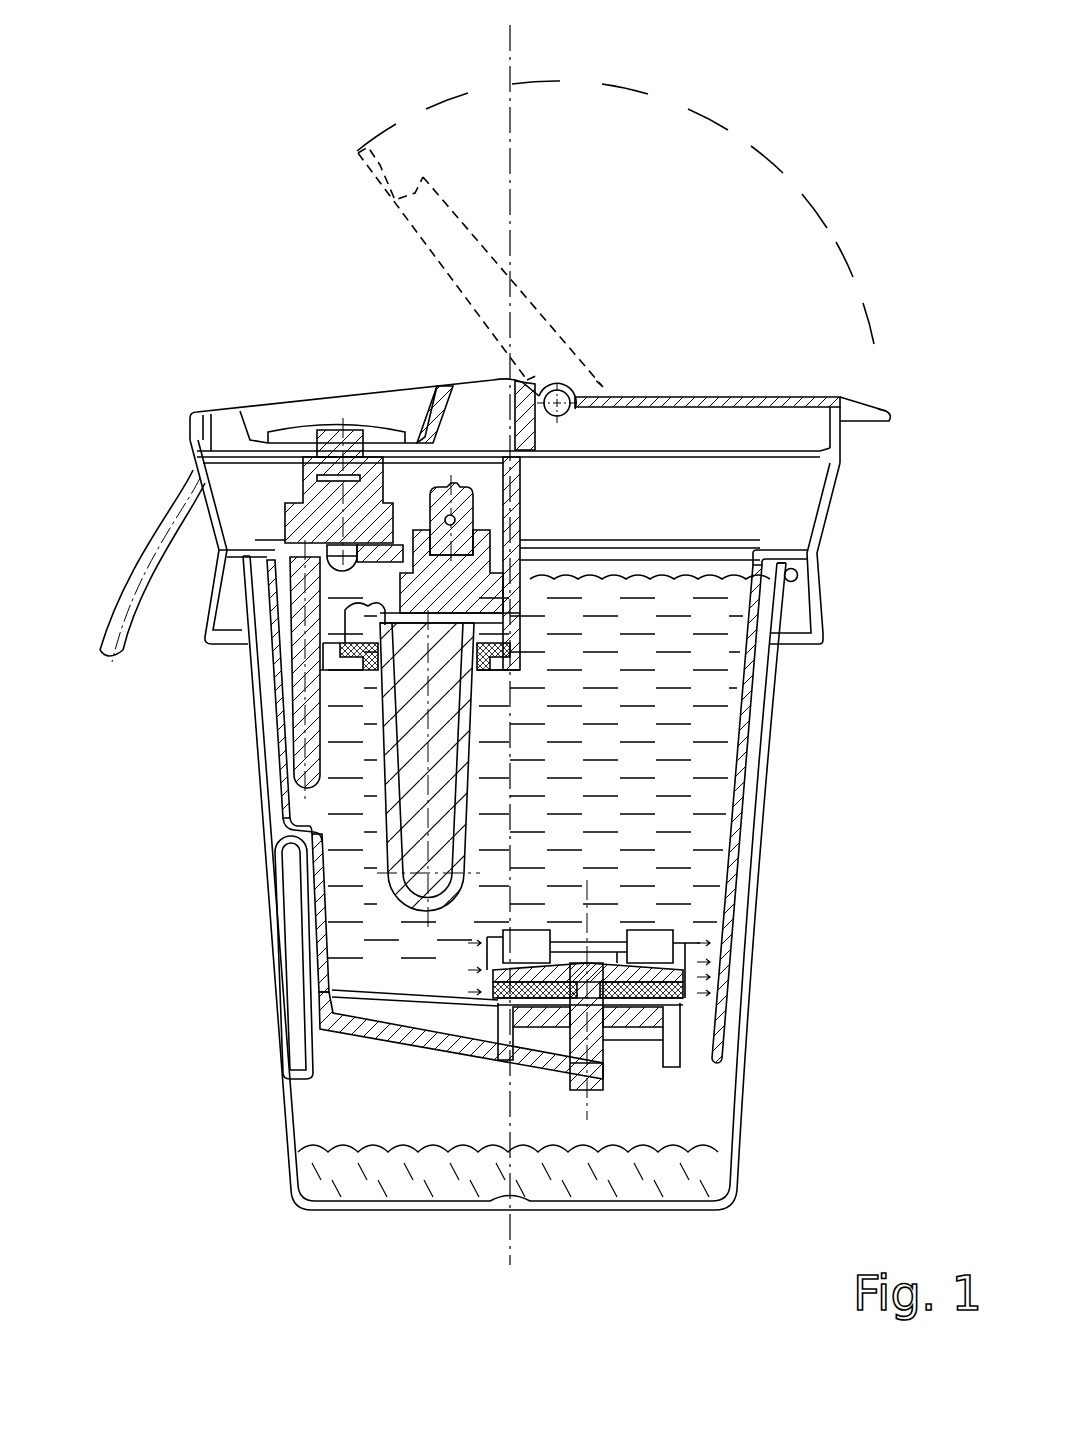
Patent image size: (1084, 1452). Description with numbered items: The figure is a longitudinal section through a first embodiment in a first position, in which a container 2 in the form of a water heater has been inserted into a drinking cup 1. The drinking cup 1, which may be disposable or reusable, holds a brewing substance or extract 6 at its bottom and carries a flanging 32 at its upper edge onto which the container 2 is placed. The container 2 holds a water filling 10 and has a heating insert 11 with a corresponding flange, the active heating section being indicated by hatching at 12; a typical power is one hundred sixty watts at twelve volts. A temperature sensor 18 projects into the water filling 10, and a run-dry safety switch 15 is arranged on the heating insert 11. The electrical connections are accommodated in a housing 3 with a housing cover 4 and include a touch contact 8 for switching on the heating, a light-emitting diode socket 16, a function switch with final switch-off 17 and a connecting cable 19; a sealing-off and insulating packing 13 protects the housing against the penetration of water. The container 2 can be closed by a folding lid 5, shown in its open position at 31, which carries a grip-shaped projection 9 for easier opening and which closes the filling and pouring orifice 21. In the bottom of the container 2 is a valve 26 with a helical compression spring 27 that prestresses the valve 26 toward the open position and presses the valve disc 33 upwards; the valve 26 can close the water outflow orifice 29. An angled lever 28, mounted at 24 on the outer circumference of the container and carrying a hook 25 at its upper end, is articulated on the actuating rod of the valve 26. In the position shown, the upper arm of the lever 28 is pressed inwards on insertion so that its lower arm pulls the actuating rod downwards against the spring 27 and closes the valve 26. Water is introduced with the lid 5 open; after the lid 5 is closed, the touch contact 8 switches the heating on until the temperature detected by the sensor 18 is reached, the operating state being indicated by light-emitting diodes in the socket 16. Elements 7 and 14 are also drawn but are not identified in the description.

The drinking cup 1 is at (762, 842).
The container 2 is at (750, 748).
The housing 3 is at (535, 548).
The housing cover 4 is at (477, 383).
The folding lid 5 is at (515, 522).
The brewing substance or extract 6 is at (677, 1150).
The container wall 7 is at (750, 803).
The touch contact 8 is at (315, 425).
The grip-shaped projection 9 is at (890, 397).
The water filling 10 is at (680, 578).
The heating insert 11 is at (463, 853).
The active heating section 12 is at (290, 833).
The sealing-off and insulating packing 13 is at (318, 708).
The seal ring 14 is at (335, 612).
The run-dry safety switch 15 is at (320, 618).
The light-emitting diode socket 16 is at (443, 427).
The function switch with final switch-off 17 is at (297, 460).
The temperature sensor 18 is at (295, 683).
The connecting cable 19 is at (140, 543).
The filling and pouring orifice 21 is at (760, 393).
The mounting point 24 is at (323, 1027).
The hook 25 is at (288, 848).
The valve 26 is at (655, 1043).
The helical compression spring 27 is at (703, 968).
The angled lever 28 is at (407, 1053).
The water outflow orifice 29 is at (665, 1050).
The open position of the lid 31 is at (543, 313).
The flanging 32 is at (797, 573).
The valve disc 33 is at (712, 995).